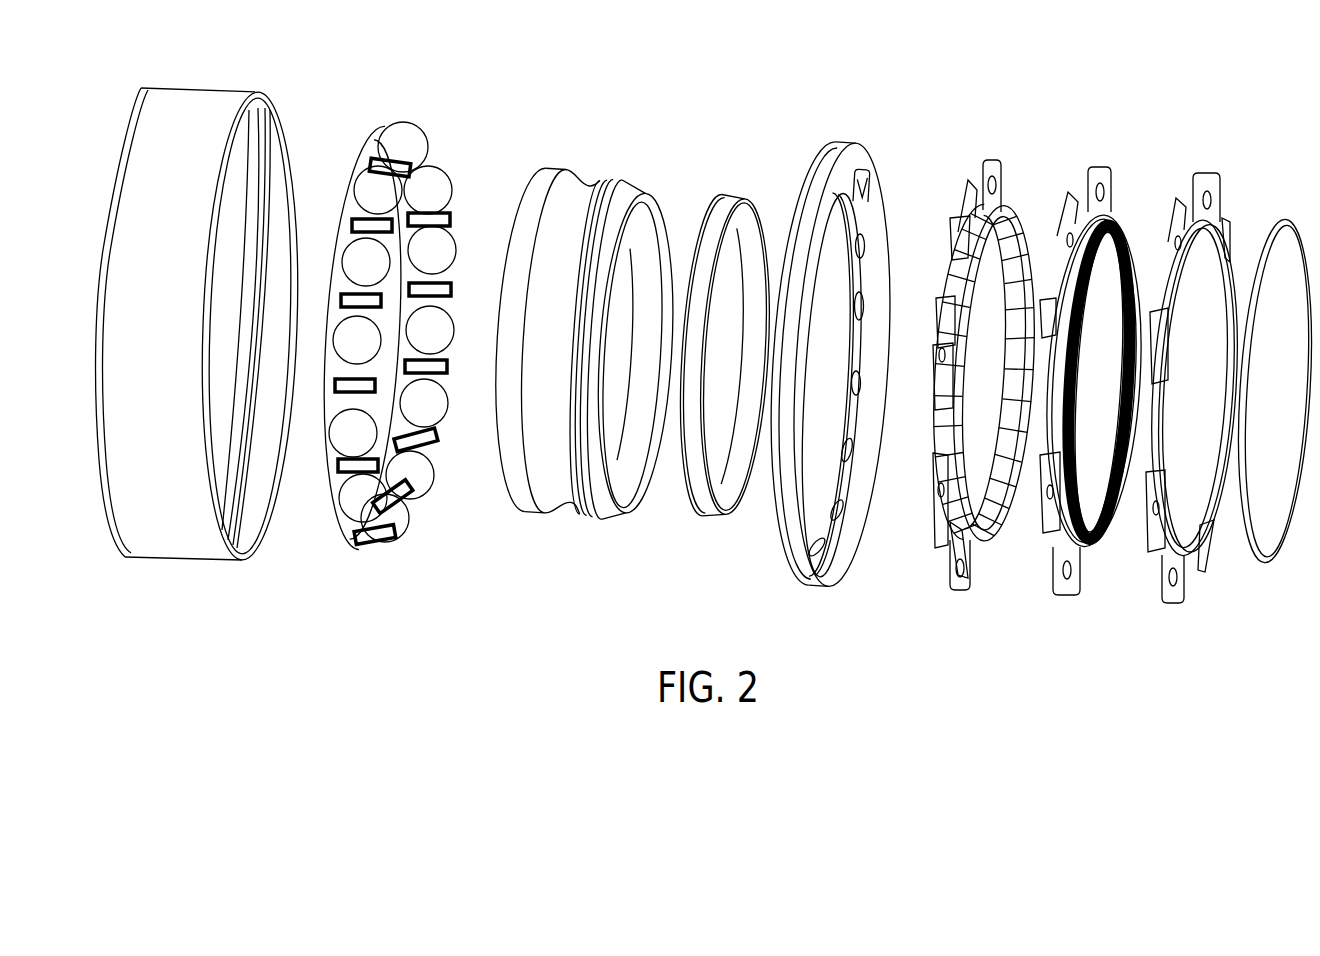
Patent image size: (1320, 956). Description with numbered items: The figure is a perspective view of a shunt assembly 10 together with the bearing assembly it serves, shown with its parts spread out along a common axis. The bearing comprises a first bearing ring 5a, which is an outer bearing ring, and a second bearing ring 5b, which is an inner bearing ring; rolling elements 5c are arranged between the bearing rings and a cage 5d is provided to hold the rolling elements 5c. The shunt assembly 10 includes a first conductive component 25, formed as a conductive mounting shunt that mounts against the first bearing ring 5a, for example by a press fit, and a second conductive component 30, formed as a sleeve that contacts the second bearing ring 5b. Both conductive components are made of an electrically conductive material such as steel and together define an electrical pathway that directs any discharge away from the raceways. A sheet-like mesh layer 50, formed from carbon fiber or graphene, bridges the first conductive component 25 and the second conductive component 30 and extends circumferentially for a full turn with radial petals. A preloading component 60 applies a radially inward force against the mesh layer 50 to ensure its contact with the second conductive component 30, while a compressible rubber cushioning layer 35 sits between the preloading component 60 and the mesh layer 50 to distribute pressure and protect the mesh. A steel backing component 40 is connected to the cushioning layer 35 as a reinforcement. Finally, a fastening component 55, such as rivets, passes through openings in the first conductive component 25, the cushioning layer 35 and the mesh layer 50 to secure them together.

The shunt assembly 10 is at (893, 140).
The first bearing ring 5a is at (221, 106).
The second bearing ring 5b is at (580, 183).
The rolling elements 5c is at (440, 170).
The cage 5d is at (358, 135).
The first conductive component 25 is at (838, 152).
The second conductive component 30 is at (728, 196).
The cushioning layer 35 is at (1105, 185).
The backing component 40 is at (1166, 600).
The mesh layer 50 is at (996, 182).
The fastening component 55 is at (870, 250).
The preloading component 60 is at (1244, 557).